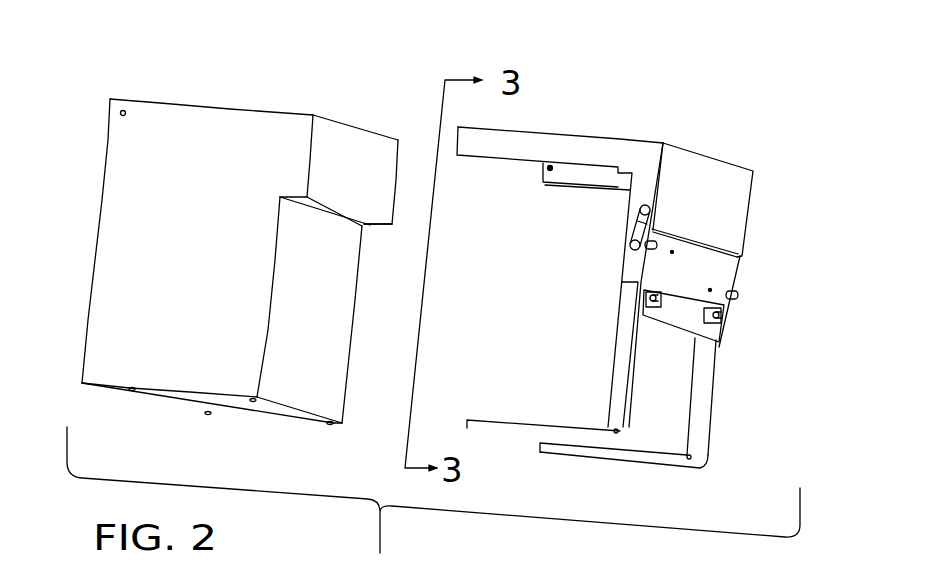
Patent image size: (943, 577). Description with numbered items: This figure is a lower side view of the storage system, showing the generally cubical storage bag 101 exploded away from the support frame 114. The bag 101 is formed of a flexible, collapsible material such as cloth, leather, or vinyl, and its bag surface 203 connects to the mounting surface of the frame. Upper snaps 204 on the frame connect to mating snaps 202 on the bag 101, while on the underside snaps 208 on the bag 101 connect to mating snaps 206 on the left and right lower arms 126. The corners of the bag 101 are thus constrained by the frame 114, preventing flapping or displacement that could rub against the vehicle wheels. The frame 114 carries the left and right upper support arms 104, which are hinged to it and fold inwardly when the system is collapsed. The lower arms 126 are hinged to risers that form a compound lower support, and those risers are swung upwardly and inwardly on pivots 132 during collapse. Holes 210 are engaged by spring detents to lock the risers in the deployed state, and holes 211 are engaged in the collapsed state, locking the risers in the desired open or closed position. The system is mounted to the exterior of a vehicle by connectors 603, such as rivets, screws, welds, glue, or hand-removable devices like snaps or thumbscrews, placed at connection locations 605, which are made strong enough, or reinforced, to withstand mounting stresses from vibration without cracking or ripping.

The storage bag 101 is at (292, 108).
The upper support arm 104 is at (535, 142).
The support frame 114 is at (655, 138).
The lower arm 126 is at (550, 428).
The pivot 132 is at (652, 240).
The mating snap 202 is at (123, 113).
The bag surface 203 is at (378, 184).
The upper snap 204 is at (550, 168).
The mating snap 206 is at (603, 428).
The snap 208 is at (132, 389).
The hole 210 is at (722, 337).
The hole 211 is at (672, 252).
The connector 603 is at (722, 322).
The connection location 605 is at (722, 312).